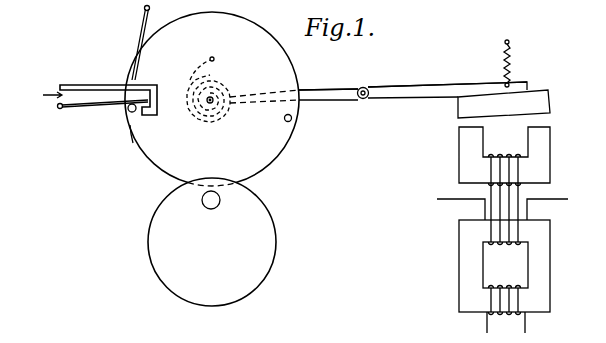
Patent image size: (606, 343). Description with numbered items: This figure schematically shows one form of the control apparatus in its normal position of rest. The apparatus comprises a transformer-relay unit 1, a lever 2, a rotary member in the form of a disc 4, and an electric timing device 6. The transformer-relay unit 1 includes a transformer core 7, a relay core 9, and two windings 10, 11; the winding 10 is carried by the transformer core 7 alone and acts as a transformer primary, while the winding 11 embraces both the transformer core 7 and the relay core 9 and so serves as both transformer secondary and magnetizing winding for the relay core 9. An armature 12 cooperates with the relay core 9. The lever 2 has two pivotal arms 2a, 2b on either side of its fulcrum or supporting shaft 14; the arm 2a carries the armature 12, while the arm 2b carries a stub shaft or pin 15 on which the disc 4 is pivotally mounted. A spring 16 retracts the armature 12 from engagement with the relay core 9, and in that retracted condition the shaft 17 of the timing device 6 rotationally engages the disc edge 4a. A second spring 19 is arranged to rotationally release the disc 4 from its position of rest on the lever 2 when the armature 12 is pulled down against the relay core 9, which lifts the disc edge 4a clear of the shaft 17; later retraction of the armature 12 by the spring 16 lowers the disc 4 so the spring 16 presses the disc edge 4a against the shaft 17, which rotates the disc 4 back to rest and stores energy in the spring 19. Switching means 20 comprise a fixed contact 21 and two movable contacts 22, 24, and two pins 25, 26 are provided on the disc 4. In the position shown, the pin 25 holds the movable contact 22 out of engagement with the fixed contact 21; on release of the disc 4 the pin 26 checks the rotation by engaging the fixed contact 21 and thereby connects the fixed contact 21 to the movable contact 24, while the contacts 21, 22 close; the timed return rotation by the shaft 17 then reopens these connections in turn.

The transformer-relay unit 1 is at (522, 156).
The lever 2 is at (402, 83).
The pivotal arm 2a is at (442, 91).
The pivotal arm 2b is at (327, 91).
The disc 4 is at (257, 38).
The disc edge 4a is at (133, 143).
The electric timing device 6 is at (282, 248).
The transformer core 7 is at (552, 266).
The relay core 9 is at (547, 176).
The winding 10 is at (501, 287).
The winding 11 is at (490, 186).
The armature 12 is at (539, 103).
The supporting shaft 14 is at (363, 99).
The stub shaft or pin 15 is at (212, 97).
The spring 16 is at (513, 61).
The shaft 17 is at (210, 205).
The second spring 19 is at (190, 78).
The switching means 20 is at (43, 94).
The fixed contact 21 is at (96, 84).
The movable contact 22 is at (98, 108).
The movable contact 24 is at (143, 28).
The pin 25 is at (135, 113).
The pin 26 is at (291, 121).